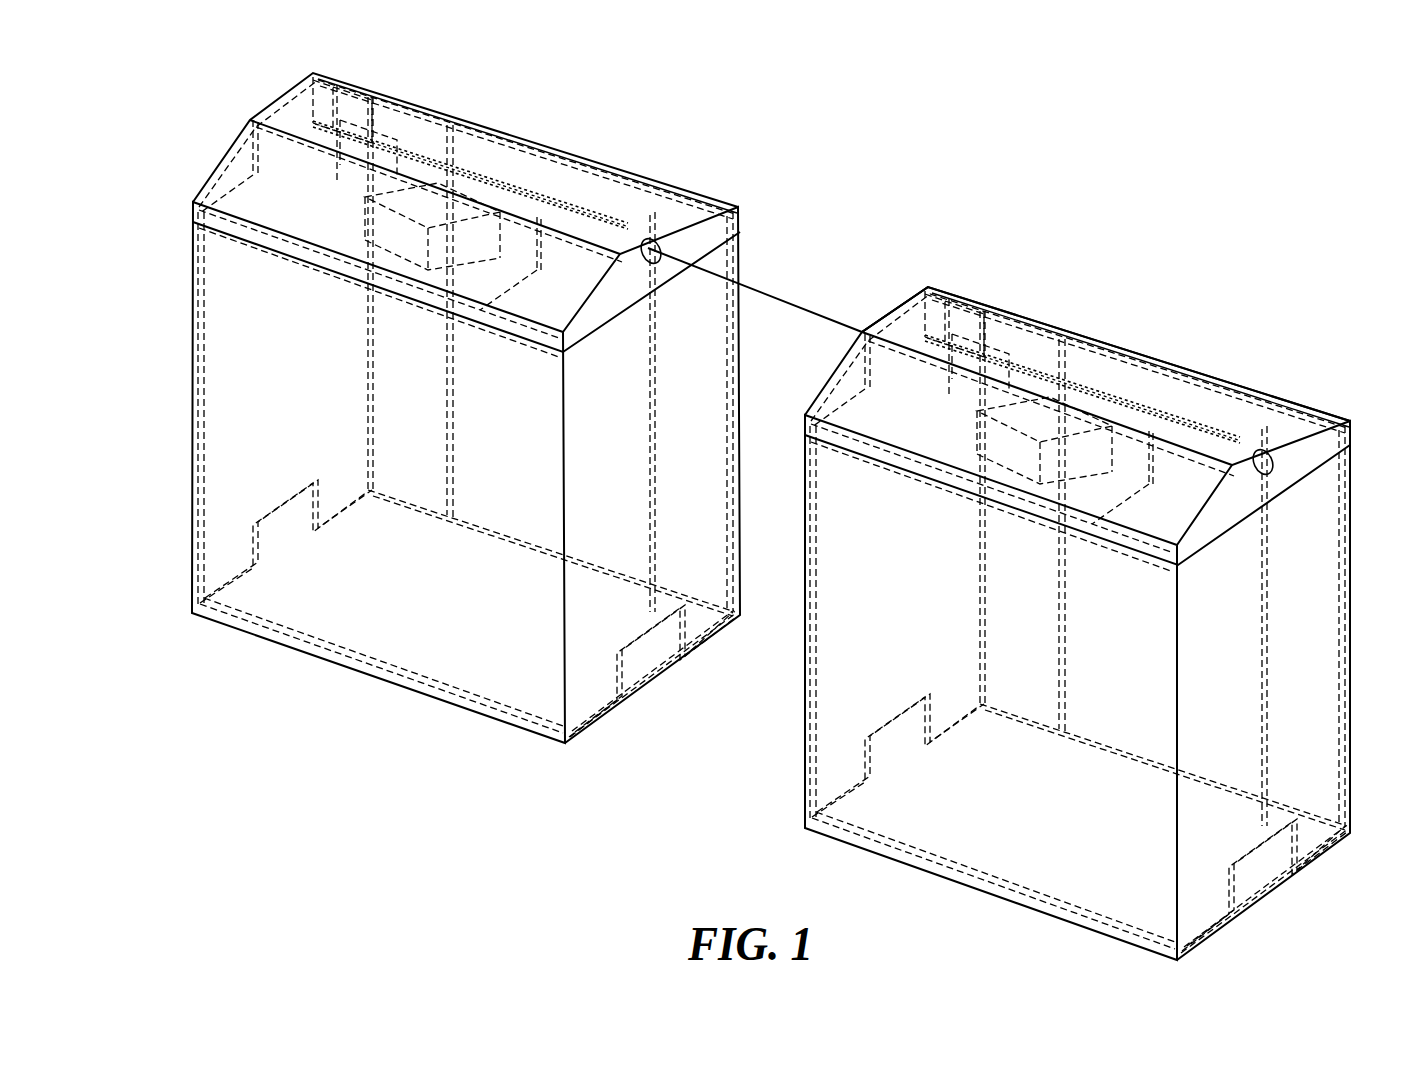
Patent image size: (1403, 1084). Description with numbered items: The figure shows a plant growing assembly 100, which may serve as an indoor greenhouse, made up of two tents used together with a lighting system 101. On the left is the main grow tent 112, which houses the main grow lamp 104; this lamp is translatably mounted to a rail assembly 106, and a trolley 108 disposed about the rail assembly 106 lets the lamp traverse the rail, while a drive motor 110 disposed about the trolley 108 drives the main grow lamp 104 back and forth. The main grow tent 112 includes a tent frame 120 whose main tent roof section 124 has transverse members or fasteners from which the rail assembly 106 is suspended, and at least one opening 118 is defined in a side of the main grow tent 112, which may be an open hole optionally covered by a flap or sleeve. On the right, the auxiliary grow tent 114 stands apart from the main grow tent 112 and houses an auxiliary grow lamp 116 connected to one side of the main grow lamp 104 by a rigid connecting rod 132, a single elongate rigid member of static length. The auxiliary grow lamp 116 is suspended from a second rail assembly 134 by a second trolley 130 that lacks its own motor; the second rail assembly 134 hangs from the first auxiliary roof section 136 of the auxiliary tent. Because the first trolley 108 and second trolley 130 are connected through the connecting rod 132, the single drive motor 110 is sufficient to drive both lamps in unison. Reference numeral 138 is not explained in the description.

The plant growing assembly 100 is at (1098, 170).
The lighting system 101 is at (1105, 385).
The main grow lamp 104 is at (357, 200).
The rail assembly 106 is at (345, 95).
The trolley 108 is at (430, 170).
The drive motor 110 is at (470, 175).
The main grow tent 112 is at (193, 585).
The auxiliary grow tent 114 is at (805, 806).
The auxiliary grow lamp 116 is at (1095, 450).
The opening 118 is at (660, 240).
The tent frame 120 is at (225, 222).
The main tent roof section 124 is at (278, 82).
The second trolley 130 is at (1040, 380).
The rigid connecting rod 132 is at (803, 306).
The second rail assembly 134 is at (960, 300).
The first auxiliary roof section 136 is at (1310, 400).
The chamfer panel 138 is at (905, 312).